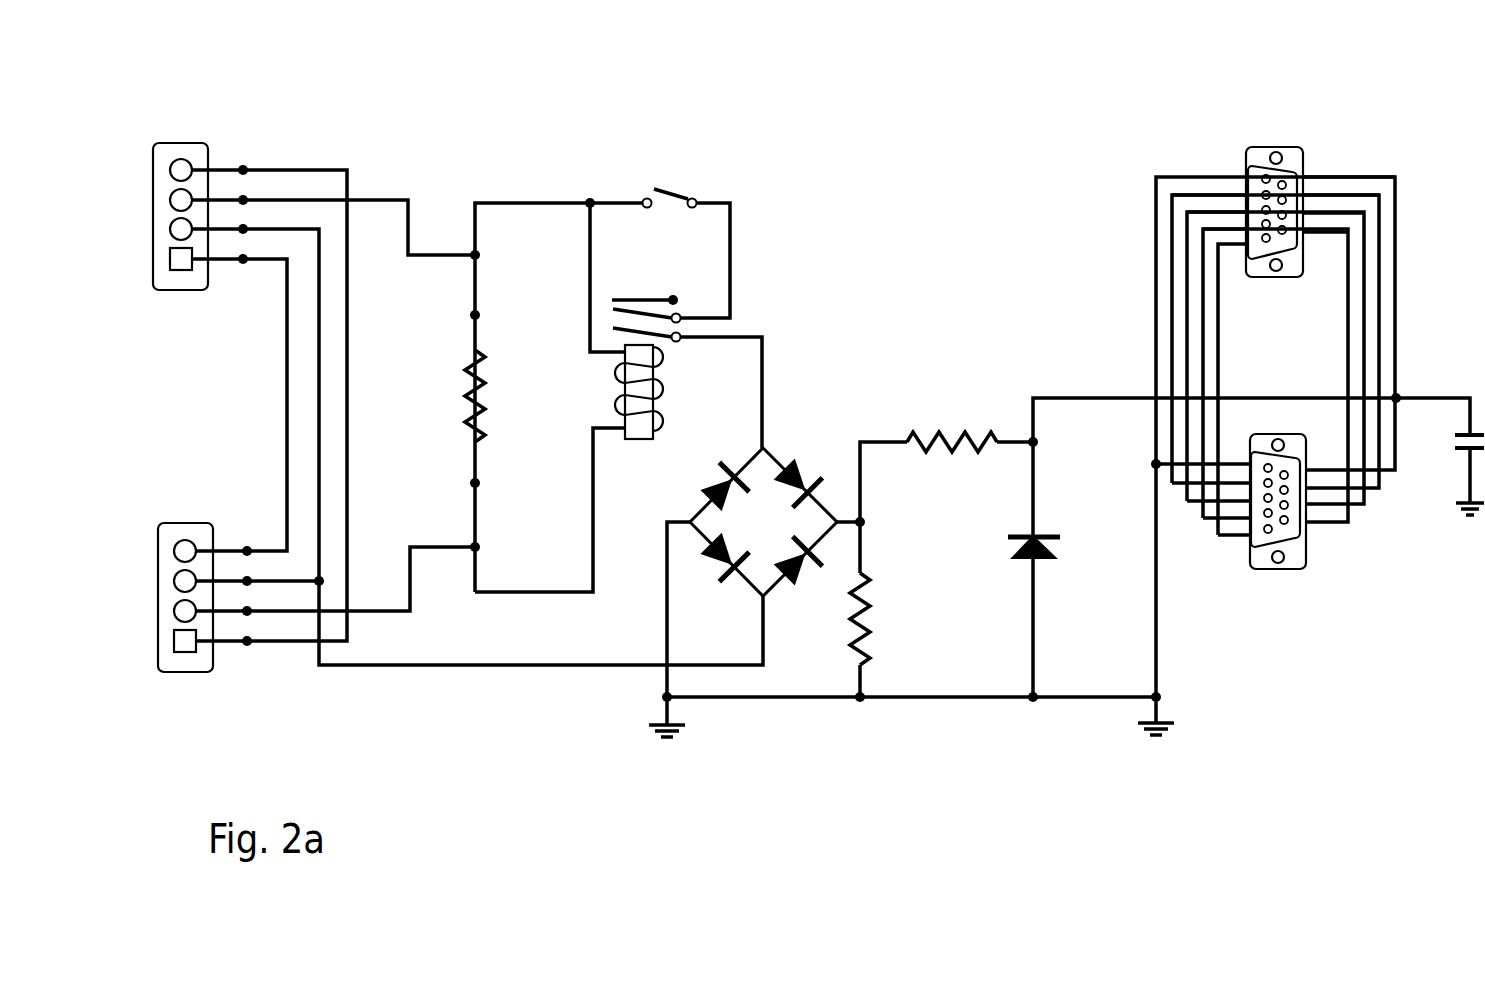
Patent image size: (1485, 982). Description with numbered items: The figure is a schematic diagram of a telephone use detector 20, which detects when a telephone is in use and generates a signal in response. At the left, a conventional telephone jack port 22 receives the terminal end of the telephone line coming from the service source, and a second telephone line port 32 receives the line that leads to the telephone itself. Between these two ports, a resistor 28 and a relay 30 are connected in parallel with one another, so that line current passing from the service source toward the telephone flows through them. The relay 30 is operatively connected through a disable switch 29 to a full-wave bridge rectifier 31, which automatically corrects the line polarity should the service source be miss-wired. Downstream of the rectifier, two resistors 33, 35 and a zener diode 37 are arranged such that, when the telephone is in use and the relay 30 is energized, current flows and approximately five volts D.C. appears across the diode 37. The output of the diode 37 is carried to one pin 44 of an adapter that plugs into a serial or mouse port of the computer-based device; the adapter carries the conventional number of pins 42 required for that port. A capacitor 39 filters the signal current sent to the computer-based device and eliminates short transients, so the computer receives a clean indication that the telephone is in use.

The telephone use detector 20 is at (854, 205).
The telephone jack port 22 is at (175, 147).
The resistor 28 is at (462, 378).
The disable switch 29 is at (670, 187).
The relay 30 is at (695, 313).
The full-wave bridge rectifier 31 is at (778, 455).
The telephone line port 32 is at (180, 527).
The resistor 33 is at (875, 628).
The resistor 35 is at (957, 425).
The zener diode 37 is at (1045, 562).
The capacitor 39 is at (1455, 452).
The pins 42 is at (1258, 170).
The pin 44 is at (1283, 182).